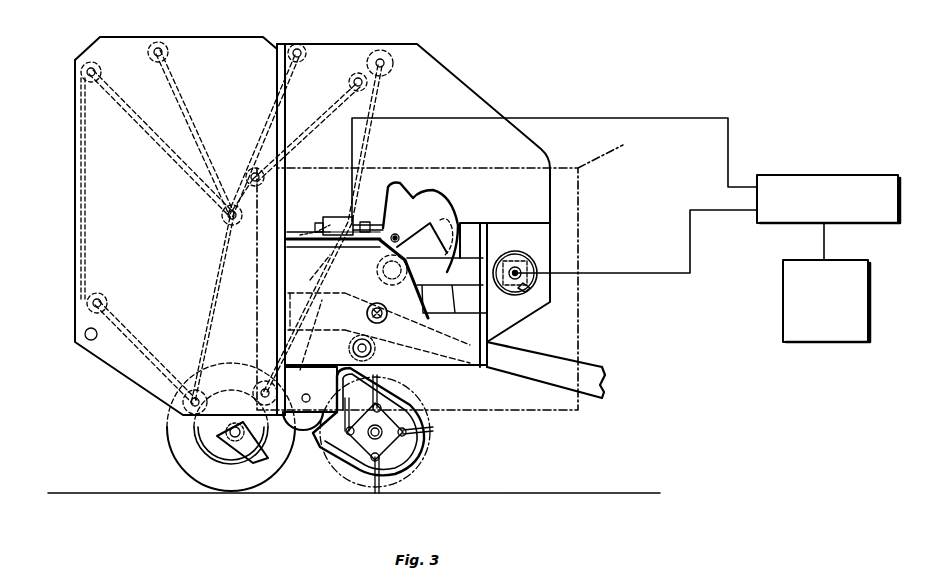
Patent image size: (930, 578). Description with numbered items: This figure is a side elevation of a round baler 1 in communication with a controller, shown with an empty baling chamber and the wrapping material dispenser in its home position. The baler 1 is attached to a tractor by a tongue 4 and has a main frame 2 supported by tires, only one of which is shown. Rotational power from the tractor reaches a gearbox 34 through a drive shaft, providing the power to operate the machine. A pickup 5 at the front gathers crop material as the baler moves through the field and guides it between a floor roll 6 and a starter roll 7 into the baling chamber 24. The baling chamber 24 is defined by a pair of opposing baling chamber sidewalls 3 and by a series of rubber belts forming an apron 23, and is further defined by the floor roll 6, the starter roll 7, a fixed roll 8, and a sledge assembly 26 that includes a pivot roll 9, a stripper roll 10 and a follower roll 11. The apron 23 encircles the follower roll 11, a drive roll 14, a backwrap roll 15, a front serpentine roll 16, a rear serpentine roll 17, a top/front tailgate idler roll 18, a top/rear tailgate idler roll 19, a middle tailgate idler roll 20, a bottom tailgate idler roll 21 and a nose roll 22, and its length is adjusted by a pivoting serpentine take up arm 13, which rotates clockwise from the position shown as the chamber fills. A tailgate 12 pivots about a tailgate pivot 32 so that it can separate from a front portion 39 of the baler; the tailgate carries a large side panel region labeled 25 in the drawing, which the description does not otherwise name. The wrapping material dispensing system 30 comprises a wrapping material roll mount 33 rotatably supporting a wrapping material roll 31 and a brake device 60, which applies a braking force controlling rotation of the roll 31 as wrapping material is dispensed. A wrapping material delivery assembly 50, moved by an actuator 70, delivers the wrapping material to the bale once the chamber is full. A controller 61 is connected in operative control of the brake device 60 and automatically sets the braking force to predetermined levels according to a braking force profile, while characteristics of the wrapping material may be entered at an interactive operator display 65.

The round baler 1 is at (532, 63).
The main frame 2 is at (540, 147).
The baling chamber sidewalls 3 is at (235, 248).
The tongue 4 is at (592, 360).
The pickup 5 is at (462, 441).
The floor roll 6 is at (450, 273).
The starter roll 7 is at (373, 350).
The fixed roll 8 is at (392, 316).
The pivot roll 9 is at (372, 265).
The stripper roll 10 is at (340, 253).
The follower roll 11 is at (317, 220).
The tailgate 12 is at (75, 200).
The serpentine take up arm 13 is at (275, 125).
The drive roll 14 is at (384, 60).
The backwrap roll 15 is at (354, 85).
The front serpentine roll 16 is at (255, 170).
The rear serpentine roll 17 is at (228, 222).
The top/front tailgate idler roll 18 is at (155, 48).
The top/rear tailgate idler roll 19 is at (86, 72).
The middle tailgate idler roll 20 is at (102, 304).
The bottom tailgate idler roll 21 is at (192, 398).
The nose roll 22 is at (262, 389).
The apron 23 is at (82, 248).
The baling chamber 24 is at (332, 312).
The tailgate wall 25 is at (122, 158).
The sledge assembly 26 is at (367, 212).
The wrapping material dispensing system 30 is at (536, 248).
The wrapping material roll 31 is at (530, 277).
The tailgate pivot 32 is at (292, 55).
The wrapping material roll mount 33 is at (518, 270).
The gearbox 34 is at (457, 312).
The front portion 39 is at (503, 113).
The wrapping material delivery assembly 50 is at (430, 210).
The brake device 60 is at (525, 285).
The controller 61 is at (853, 183).
The interactive operator display 65 is at (790, 272).
The actuator 70 is at (335, 220).